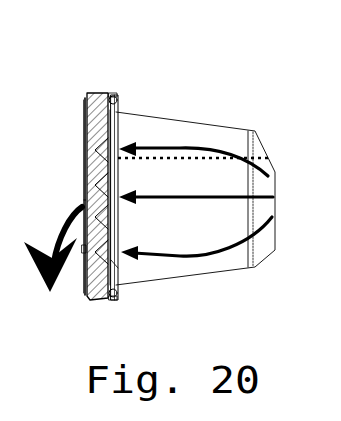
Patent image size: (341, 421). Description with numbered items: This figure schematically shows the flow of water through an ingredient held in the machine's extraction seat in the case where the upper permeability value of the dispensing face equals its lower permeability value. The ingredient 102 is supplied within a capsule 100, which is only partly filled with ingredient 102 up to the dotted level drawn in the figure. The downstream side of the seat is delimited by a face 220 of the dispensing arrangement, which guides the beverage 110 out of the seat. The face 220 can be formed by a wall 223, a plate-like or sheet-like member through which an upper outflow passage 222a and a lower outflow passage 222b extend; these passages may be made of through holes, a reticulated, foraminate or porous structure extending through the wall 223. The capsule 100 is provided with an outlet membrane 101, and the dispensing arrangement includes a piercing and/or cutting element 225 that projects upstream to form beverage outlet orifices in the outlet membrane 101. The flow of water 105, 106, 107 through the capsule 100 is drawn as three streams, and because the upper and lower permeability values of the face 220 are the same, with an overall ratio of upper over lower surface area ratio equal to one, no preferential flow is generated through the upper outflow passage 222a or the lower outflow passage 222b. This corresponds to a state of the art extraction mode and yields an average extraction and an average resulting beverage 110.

The capsule 100 is at (233, 268).
The outlet membrane 101 is at (118, 263).
The ingredient 102 is at (172, 157).
The flow of water 105 is at (260, 230).
The flow of water 106 is at (262, 198).
The flow of water 107 is at (266, 170).
The beverage 110 is at (63, 215).
The face 220 is at (113, 203).
The upper outflow passage 222a is at (87, 143).
The lower outflow passage 222b is at (97, 235).
The wall 223 is at (97, 107).
The piercing and/or cutting element 225 is at (115, 147).